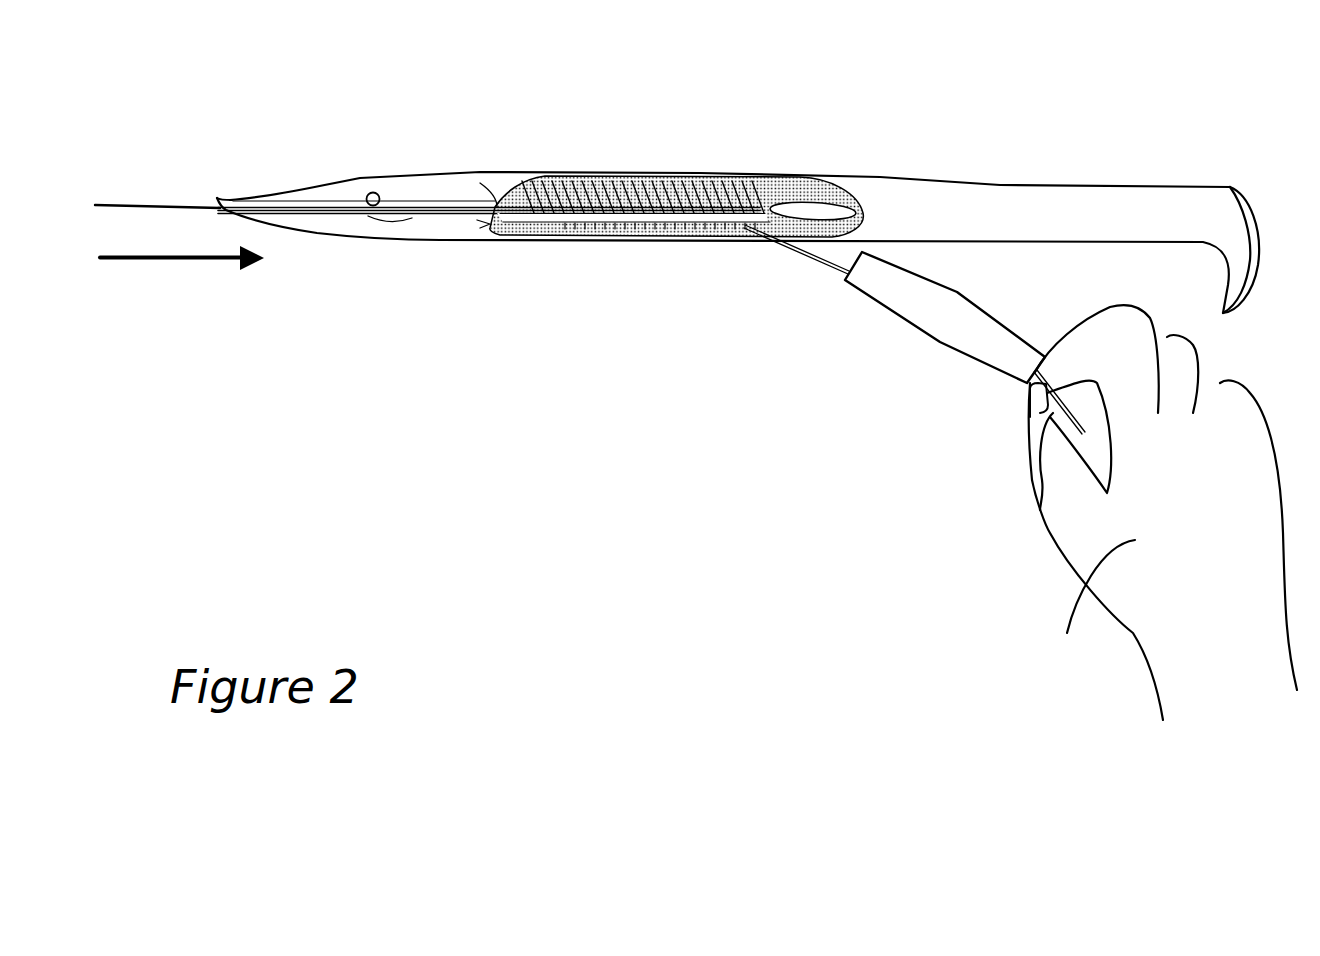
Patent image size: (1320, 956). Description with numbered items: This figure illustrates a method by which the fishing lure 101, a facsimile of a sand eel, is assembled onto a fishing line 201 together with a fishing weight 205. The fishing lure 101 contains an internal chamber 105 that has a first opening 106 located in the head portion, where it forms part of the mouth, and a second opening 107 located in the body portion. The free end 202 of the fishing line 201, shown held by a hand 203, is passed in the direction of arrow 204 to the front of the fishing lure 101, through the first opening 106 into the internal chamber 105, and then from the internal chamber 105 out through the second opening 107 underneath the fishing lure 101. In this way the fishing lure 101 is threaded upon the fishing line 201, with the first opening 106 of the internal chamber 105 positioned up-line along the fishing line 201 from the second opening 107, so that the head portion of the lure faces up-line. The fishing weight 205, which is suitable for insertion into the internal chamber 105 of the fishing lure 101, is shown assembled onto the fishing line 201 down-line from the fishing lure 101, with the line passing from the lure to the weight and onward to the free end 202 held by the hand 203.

The fishing lure 101 is at (538, 158).
The internal chamber 105 is at (617, 225).
The first opening 106 is at (217, 198).
The second opening 107 is at (830, 260).
The fishing line 201 is at (173, 203).
The free end 202 is at (1032, 480).
The hand 203 is at (1067, 633).
The arrow 204 is at (168, 259).
The fishing weight 205 is at (975, 330).